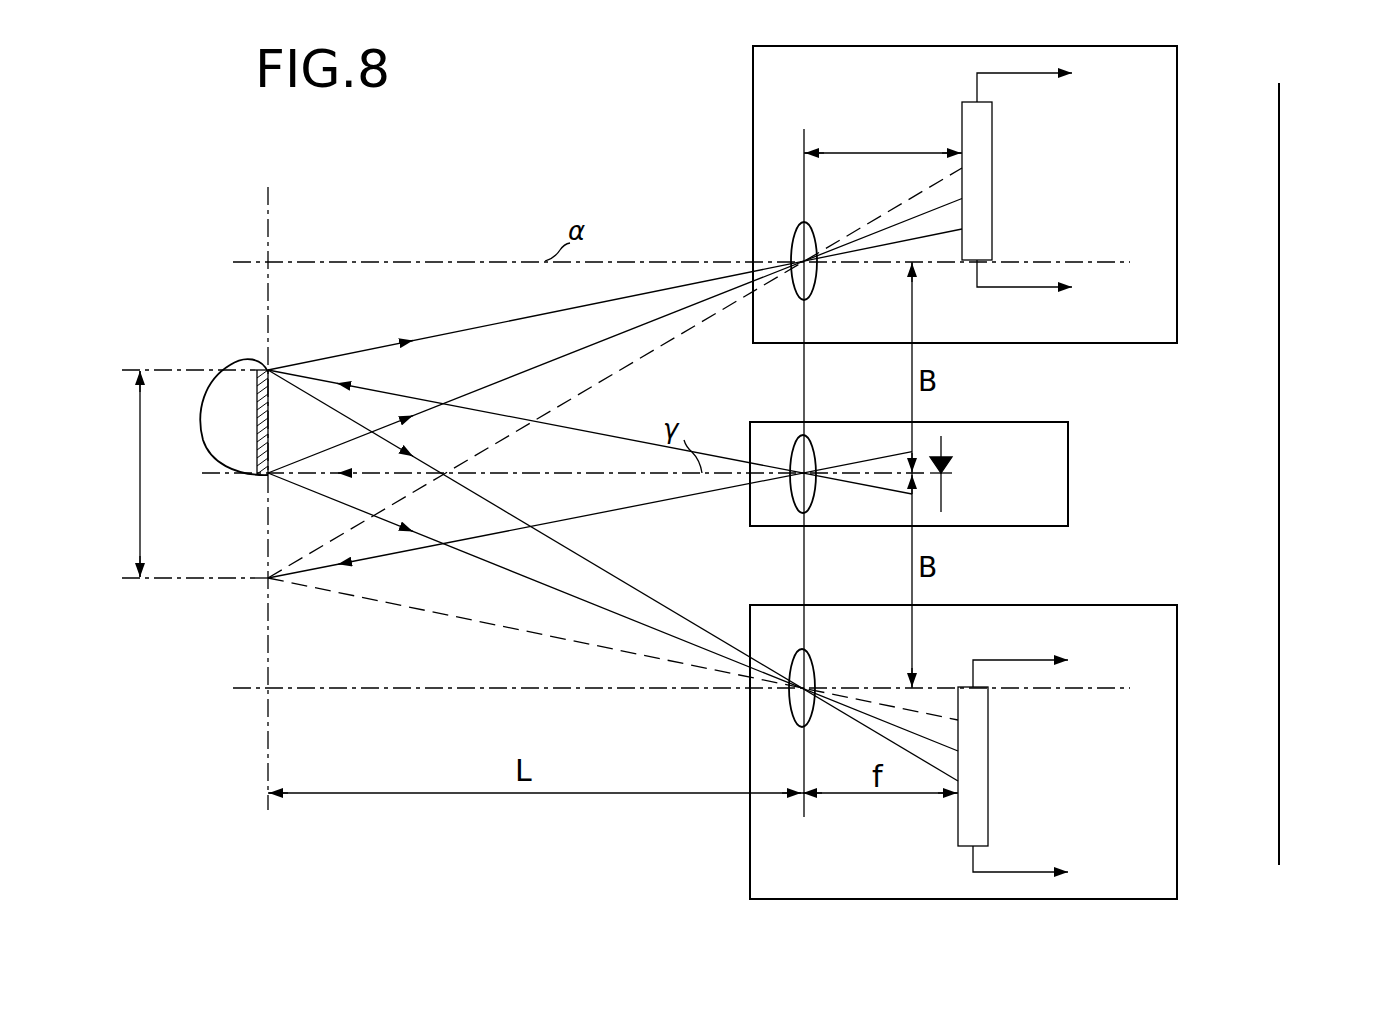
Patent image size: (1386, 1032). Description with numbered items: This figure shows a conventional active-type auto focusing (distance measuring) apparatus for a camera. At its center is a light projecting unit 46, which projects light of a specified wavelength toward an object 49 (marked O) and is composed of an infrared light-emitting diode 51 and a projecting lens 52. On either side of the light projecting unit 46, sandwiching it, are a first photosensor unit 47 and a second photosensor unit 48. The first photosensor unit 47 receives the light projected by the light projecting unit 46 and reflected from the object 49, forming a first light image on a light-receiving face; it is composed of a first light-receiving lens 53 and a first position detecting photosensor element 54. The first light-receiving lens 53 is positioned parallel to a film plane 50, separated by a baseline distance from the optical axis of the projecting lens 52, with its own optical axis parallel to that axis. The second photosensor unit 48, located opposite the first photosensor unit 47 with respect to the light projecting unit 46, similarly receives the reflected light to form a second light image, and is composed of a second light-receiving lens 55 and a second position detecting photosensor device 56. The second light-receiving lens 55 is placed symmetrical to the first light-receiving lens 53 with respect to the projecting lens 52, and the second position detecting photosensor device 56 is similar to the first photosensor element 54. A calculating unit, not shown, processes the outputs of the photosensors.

The light projecting unit 46 is at (1068, 463).
The first photosensor unit 47 is at (1177, 99).
The second photosensor unit 48 is at (1177, 669).
The object 49 is at (254, 362).
The film plane 50 is at (1280, 278).
The infrared light-emitting diode 51 is at (952, 465).
The projecting lens 52 is at (814, 457).
The first light-receiving lens 53 is at (815, 238).
The first position detecting photosensor element 54 is at (962, 125).
The second light-receiving lens 55 is at (814, 676).
The second position detecting photosensor device 56 is at (958, 823).